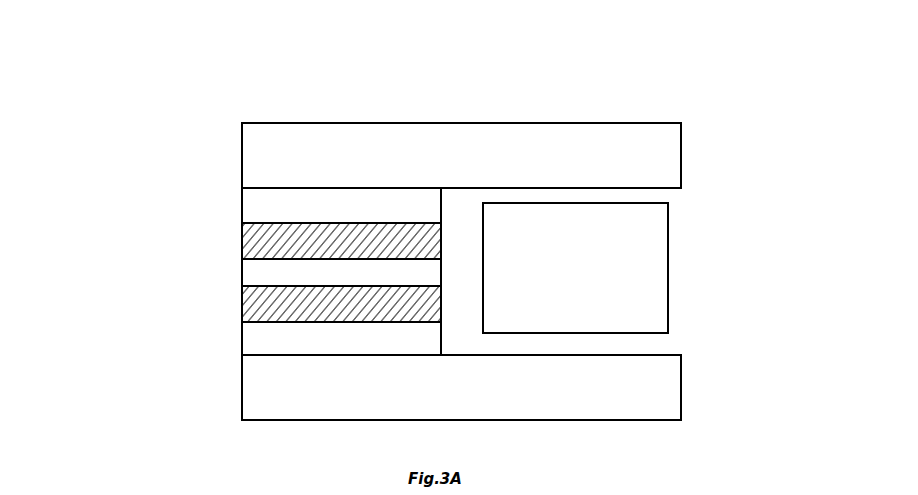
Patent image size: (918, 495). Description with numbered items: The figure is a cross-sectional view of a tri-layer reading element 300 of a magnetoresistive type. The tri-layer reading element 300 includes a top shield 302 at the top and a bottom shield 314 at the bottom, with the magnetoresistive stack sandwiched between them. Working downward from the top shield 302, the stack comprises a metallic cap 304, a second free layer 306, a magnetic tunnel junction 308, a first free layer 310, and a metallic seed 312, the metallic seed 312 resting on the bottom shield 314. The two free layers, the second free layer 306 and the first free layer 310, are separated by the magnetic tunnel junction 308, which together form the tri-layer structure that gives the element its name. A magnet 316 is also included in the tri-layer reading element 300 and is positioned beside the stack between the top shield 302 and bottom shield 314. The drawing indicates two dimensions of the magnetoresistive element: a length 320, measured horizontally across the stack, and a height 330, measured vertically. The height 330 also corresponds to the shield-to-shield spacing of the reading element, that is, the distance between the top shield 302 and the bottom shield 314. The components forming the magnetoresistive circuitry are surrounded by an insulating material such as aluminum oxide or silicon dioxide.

The tri-layer reading element 300 is at (618, 88).
The top shield 302 is at (262, 150).
The metallic cap 304 is at (262, 203).
The second free layer 306 is at (270, 245).
The magnetic tunnel junction 308 is at (258, 275).
The first free layer 310 is at (268, 302).
The metallic seed 312 is at (258, 338).
The bottom shield 314 is at (271, 393).
The magnet 316 is at (645, 262).
The length 320 is at (438, 100).
The height 330 is at (132, 353).